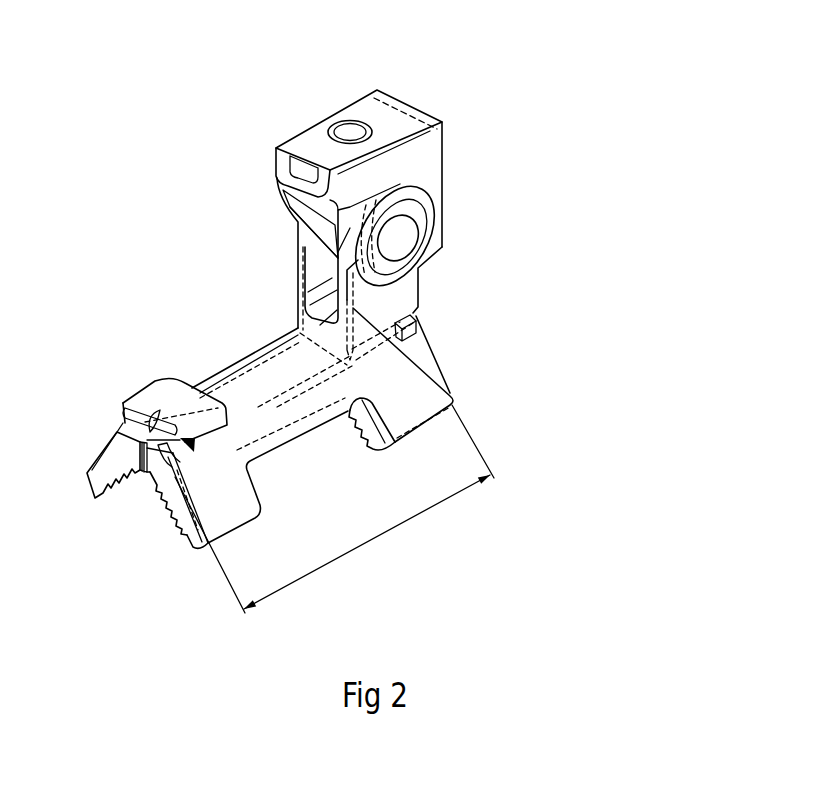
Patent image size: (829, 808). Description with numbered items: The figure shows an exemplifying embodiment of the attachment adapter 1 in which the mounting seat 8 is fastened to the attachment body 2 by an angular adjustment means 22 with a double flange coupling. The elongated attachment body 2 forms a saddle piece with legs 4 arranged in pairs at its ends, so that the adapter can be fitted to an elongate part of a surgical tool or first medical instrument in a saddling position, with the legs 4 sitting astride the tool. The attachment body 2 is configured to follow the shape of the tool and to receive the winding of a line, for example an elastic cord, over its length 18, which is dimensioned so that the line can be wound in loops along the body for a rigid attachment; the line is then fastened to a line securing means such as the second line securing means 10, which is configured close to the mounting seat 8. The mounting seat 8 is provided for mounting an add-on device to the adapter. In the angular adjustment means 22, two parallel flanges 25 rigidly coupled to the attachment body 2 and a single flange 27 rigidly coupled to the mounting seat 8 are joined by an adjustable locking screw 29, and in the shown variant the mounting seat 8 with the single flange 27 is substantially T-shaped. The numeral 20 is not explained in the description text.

The attachment adapter 1 is at (87, 265).
The attachment body 2 is at (168, 353).
The legs 4 is at (403, 417).
The mounting seat 8 is at (383, 125).
The second line securing means 10 is at (422, 317).
The length 18 is at (367, 542).
The bore 20 is at (352, 132).
The angular adjustment means 22 is at (442, 275).
The parallel flanges 25 is at (302, 279).
The single flange 27 is at (310, 235).
The adjustable locking screw 29 is at (398, 237).